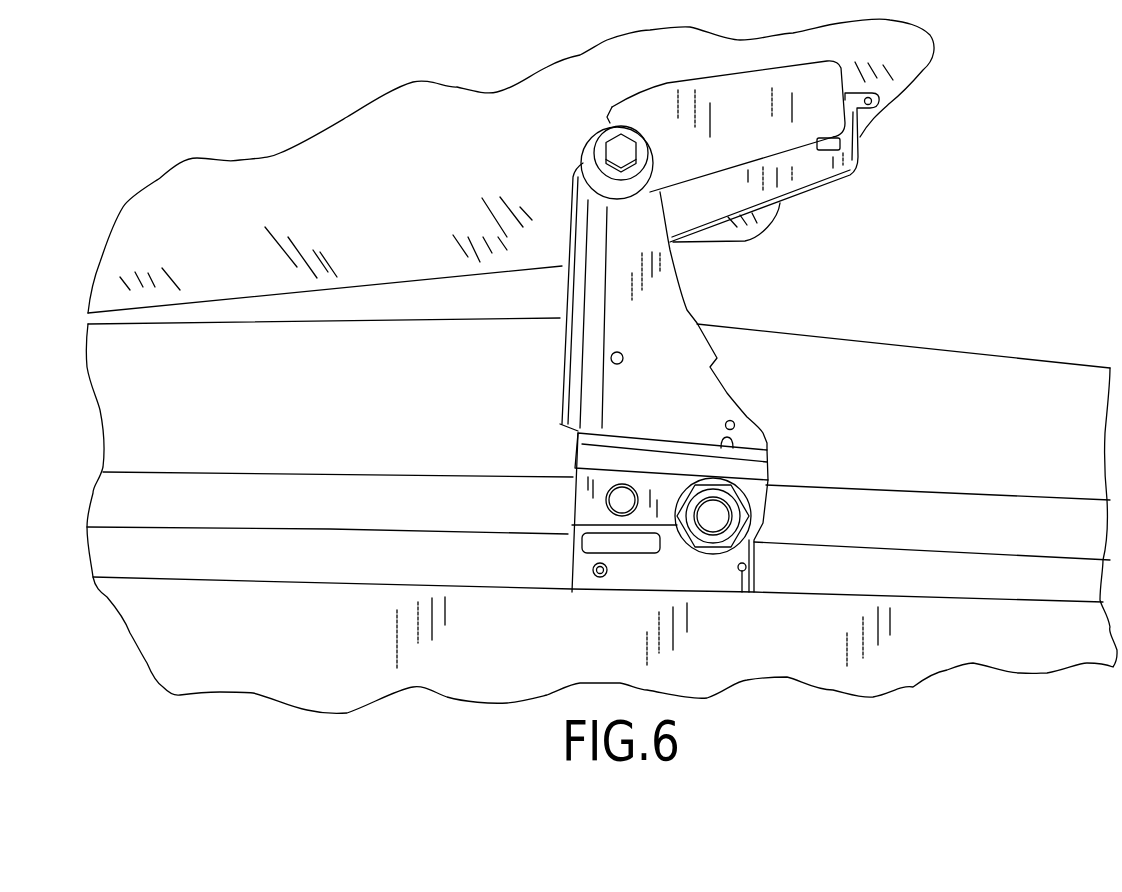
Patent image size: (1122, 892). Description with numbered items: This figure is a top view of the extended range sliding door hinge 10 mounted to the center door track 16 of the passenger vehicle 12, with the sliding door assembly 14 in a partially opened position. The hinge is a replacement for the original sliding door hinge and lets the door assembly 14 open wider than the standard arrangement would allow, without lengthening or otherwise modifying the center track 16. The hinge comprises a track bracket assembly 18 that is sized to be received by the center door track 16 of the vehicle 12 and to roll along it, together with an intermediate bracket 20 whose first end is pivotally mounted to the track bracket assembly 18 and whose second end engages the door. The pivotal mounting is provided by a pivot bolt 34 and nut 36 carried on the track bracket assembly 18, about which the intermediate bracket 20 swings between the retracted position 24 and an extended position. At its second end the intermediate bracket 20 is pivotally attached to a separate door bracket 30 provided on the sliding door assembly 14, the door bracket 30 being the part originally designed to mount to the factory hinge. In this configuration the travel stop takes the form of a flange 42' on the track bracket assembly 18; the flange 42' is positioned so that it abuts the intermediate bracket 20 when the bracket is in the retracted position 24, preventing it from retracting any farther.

The extended range sliding door hinge 10 is at (533, 362).
The passenger vehicle 12 is at (965, 401).
The sliding door assembly 14 is at (458, 146).
The center door track 16 is at (326, 506).
The track bracket assembly 18 is at (630, 513).
The intermediate bracket 20 is at (757, 390).
The retracted position 24 is at (530, 453).
The door bracket 30 is at (874, 191).
The pivot bolt 34 is at (727, 527).
The nut 36 is at (737, 500).
The flange 42' is at (651, 563).